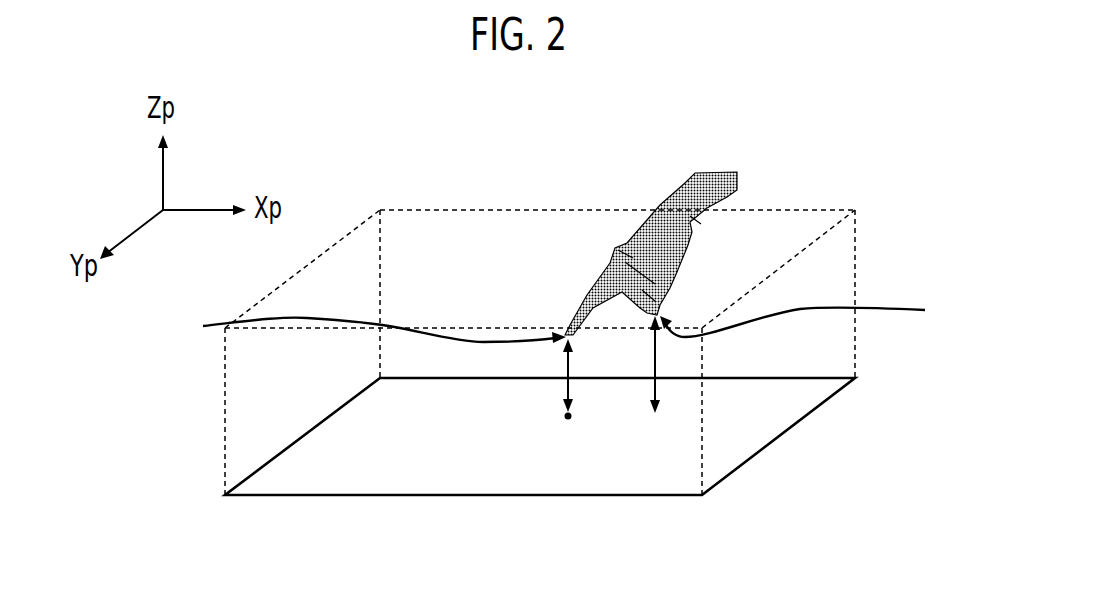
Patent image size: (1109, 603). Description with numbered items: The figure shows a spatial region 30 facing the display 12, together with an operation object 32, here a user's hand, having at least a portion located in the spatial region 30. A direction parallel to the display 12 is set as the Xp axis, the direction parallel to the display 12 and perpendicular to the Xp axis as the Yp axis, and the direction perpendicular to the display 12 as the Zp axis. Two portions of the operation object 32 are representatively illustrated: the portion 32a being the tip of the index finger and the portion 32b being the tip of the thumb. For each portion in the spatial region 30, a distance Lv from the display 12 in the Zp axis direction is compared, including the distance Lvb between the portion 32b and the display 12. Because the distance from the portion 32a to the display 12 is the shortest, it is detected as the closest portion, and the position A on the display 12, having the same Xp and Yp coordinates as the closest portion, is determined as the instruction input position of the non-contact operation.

The display 12 is at (387, 473).
The spatial region 30 is at (812, 343).
The operation object 32 is at (624, 222).
The portion 32a is at (362, 324).
The portion 32b is at (816, 314).
The distance Lv is at (525, 375).
The distance Lvb is at (675, 364).
The position A is at (568, 419).